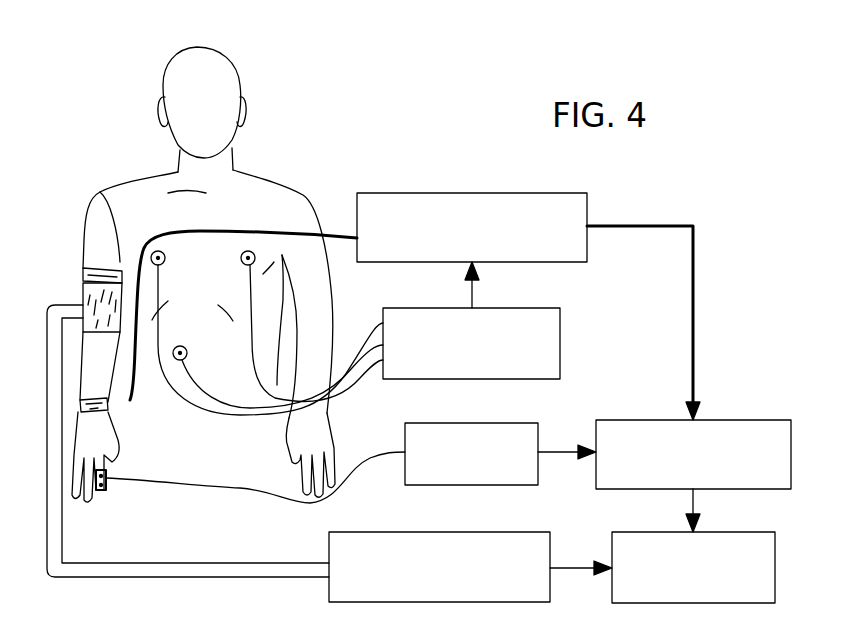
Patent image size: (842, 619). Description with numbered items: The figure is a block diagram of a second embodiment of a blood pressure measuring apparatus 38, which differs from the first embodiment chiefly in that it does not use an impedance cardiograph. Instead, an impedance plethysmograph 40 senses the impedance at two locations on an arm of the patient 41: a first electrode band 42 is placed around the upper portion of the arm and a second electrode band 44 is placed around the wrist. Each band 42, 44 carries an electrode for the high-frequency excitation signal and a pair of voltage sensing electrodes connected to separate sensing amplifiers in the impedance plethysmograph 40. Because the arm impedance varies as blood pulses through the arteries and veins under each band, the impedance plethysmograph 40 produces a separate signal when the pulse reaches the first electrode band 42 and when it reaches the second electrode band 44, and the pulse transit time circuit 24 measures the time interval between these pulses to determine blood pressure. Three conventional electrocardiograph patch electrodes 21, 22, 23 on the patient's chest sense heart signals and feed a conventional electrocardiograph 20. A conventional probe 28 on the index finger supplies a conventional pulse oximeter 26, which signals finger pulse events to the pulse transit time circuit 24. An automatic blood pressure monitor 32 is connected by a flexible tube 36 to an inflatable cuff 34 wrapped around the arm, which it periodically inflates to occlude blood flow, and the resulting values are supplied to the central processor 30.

The electrocardiograph 20 is at (534, 308).
The electrocardiograph patch electrode 21 is at (165, 255).
The electrocardiograph patch electrode 22 is at (241, 262).
The electrocardiograph patch electrode 23 is at (187, 352).
The pulse transit time circuit 24 is at (666, 420).
The pulse oximeter 26 is at (446, 423).
The probe 28 is at (112, 492).
The central processor 30 is at (630, 532).
The automatic blood pressure monitor 32 is at (416, 532).
The inflatable cuff 34 is at (84, 300).
The flexible tube 36 is at (315, 563).
The apparatus 38 is at (672, 197).
The impedance plethysmograph 40 is at (417, 193).
The patient 41 is at (147, 193).
The first electrode band 42 is at (86, 272).
The second electrode band 44 is at (110, 410).